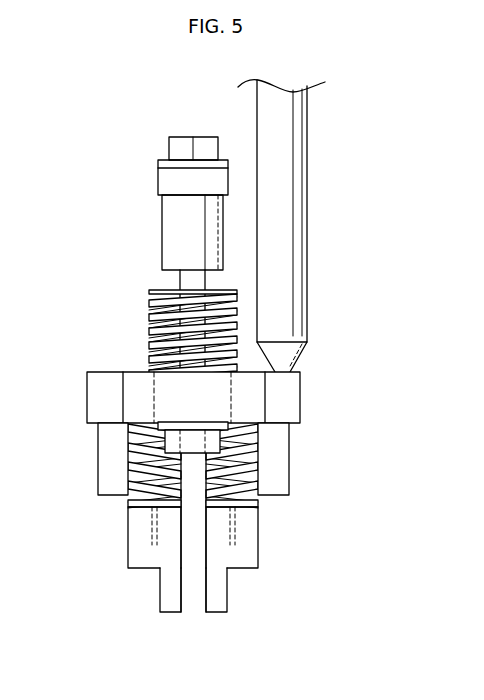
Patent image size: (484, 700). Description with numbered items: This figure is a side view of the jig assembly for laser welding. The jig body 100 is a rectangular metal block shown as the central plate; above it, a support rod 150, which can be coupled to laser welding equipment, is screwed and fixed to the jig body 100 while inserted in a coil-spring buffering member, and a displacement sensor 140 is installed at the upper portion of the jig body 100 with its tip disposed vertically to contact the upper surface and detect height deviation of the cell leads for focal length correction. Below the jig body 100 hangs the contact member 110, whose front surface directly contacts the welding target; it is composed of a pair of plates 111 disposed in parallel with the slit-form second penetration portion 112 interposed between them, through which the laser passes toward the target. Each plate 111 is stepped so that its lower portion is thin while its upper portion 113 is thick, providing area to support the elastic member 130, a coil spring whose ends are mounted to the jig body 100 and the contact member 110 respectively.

The jig body 100 is at (300, 383).
The contact member 110 is at (199, 550).
The plate 111 is at (165, 597).
The second penetration portion 112 is at (193, 605).
The upper portion 113 is at (268, 484).
The elastic member 130 is at (255, 442).
The displacement sensor 140 is at (308, 172).
The support rod 150 is at (140, 253).